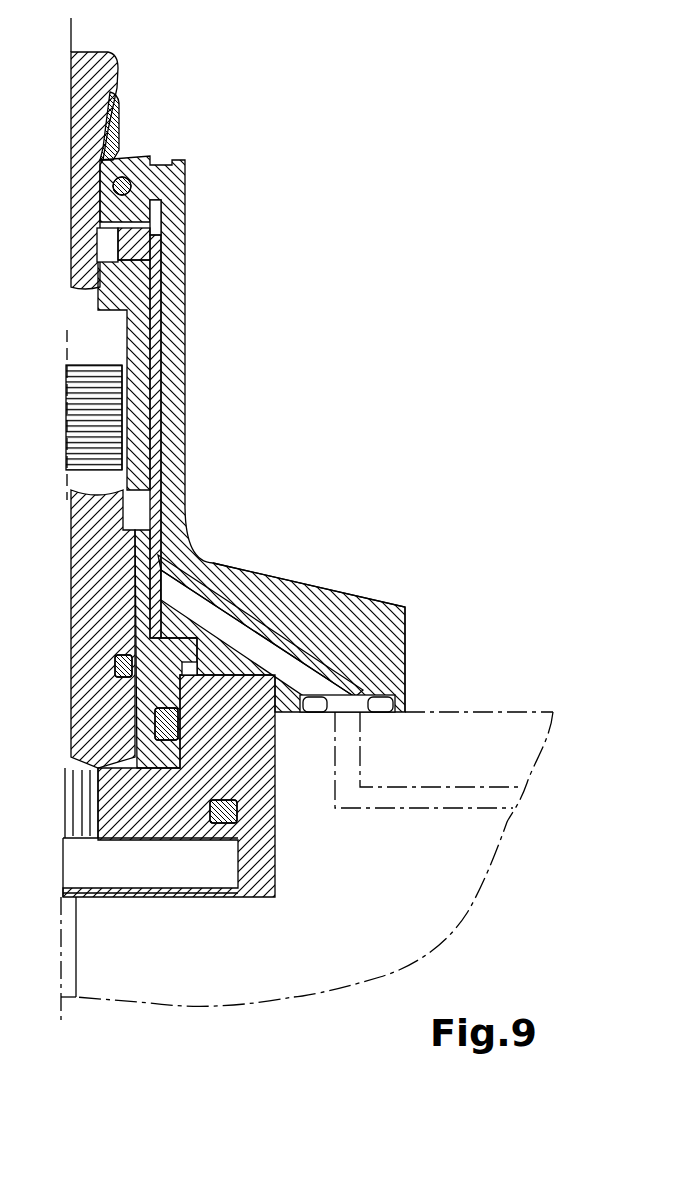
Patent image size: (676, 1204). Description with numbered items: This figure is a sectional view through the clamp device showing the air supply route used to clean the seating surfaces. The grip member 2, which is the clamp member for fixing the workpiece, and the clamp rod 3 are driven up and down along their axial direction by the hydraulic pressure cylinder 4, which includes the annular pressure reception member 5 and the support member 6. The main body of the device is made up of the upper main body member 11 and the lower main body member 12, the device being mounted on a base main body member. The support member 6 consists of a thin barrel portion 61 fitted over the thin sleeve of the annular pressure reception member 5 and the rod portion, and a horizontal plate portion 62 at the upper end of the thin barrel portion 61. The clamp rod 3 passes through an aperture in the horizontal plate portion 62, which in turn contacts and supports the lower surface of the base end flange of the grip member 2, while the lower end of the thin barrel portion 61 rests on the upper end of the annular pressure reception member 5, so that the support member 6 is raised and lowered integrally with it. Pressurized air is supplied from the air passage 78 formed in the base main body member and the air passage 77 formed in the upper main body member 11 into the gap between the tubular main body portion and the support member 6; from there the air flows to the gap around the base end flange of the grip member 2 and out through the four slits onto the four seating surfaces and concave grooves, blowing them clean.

The grip member 2 is at (121, 132).
The clamp rod 3 is at (112, 55).
The hydraulic pressure cylinder 4 is at (168, 852).
The annular pressure reception member 5 is at (172, 636).
The support member 6 is at (166, 376).
The upper main body member 11 is at (405, 606).
The lower main body member 12 is at (260, 862).
The thin barrel portion 61 is at (153, 324).
The horizontal plate portion 62 is at (152, 230).
The air passage 77 is at (255, 614).
The air passage 78 is at (403, 787).